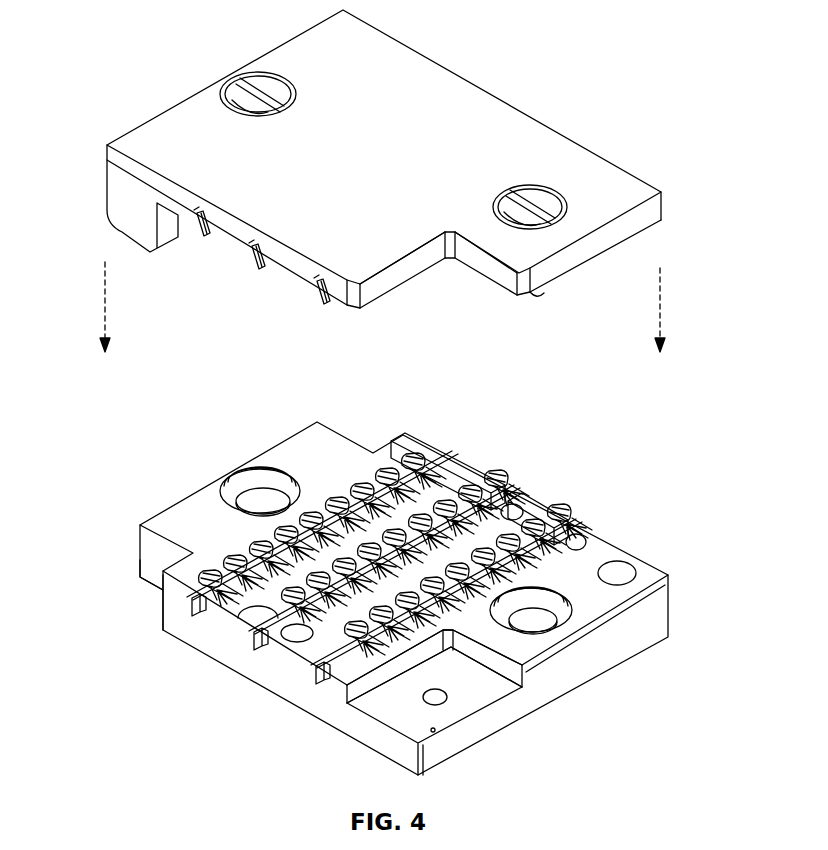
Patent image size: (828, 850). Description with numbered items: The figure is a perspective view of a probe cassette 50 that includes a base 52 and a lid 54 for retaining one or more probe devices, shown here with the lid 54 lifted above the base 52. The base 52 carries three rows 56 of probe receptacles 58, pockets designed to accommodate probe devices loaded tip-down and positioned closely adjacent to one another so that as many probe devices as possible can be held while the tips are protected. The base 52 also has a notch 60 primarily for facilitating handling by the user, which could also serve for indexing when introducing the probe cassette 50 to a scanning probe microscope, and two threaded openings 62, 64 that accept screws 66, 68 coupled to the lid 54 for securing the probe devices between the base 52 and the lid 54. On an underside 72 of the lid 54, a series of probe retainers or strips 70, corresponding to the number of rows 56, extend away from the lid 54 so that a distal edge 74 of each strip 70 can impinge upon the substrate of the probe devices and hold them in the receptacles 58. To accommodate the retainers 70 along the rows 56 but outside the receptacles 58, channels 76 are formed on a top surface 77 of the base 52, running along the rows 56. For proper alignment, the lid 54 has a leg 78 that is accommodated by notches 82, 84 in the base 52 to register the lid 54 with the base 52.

The probe cassette 50 is at (673, 246).
The base 52 is at (654, 567).
The lid 54 is at (415, 50).
The rows 56 is at (455, 438).
The probe receptacles 58 is at (192, 597).
The notch 60 is at (468, 708).
The threaded opening 62 is at (236, 492).
The threaded opening 64 is at (540, 623).
The screw 66 is at (240, 80).
The screw 68 is at (550, 196).
The probe retainers 70 is at (196, 224).
The underside 72 is at (420, 274).
The distal edge 74 is at (205, 236).
The channels 76 is at (443, 457).
The top surface 77 is at (597, 558).
The leg 78 is at (111, 181).
The notch 82 is at (133, 582).
The notch 84 is at (355, 421).